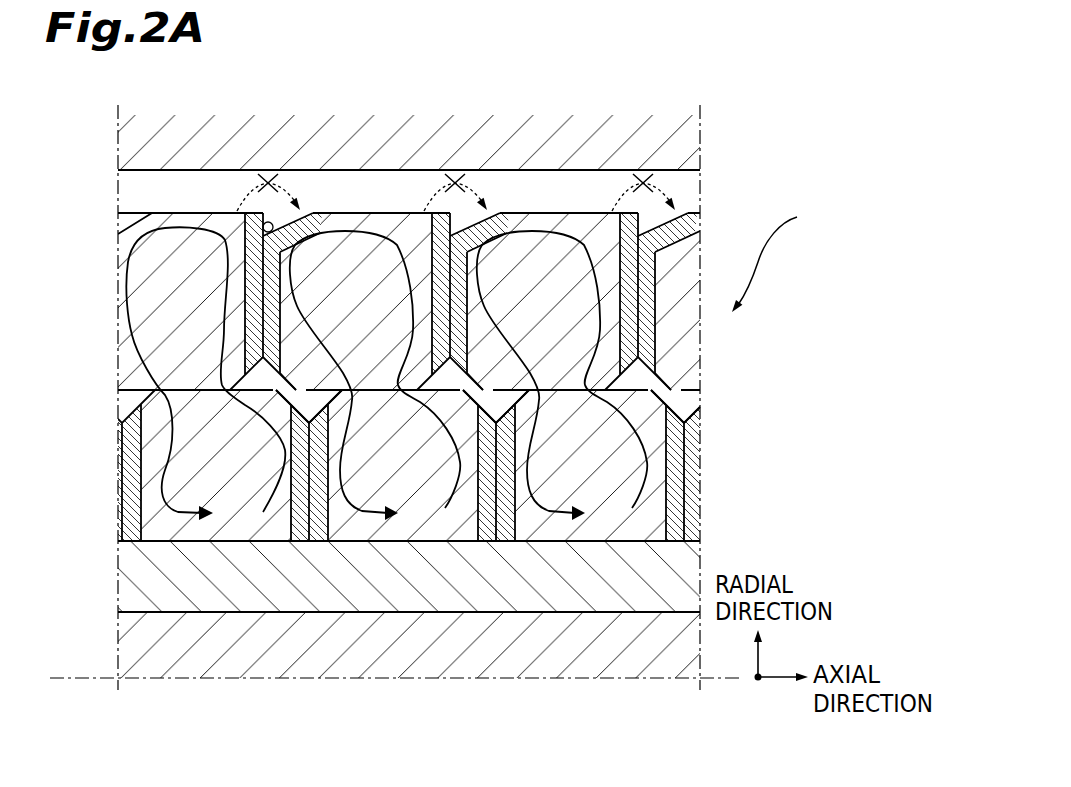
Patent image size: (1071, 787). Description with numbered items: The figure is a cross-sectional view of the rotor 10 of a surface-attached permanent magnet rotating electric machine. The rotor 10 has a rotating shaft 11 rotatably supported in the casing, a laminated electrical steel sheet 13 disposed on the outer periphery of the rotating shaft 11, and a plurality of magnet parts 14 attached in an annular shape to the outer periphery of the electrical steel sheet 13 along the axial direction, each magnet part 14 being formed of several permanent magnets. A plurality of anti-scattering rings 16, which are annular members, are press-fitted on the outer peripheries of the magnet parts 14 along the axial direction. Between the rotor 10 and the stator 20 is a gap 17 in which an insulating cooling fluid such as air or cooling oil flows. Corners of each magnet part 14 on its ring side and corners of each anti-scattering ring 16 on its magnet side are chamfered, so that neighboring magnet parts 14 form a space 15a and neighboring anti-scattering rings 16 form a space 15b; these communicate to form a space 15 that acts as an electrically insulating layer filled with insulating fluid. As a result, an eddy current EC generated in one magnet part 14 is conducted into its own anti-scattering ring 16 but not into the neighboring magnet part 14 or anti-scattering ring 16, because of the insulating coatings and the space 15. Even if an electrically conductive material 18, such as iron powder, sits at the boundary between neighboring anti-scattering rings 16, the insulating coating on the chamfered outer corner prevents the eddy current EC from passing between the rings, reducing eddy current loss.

The rotor 10 is at (779, 254).
The rotating shaft 11 is at (135, 641).
The electrical steel sheet 13 is at (135, 578).
The magnet part 14 is at (232, 503).
The space 15 is at (797, 333).
The space 15a is at (688, 400).
The space 15b is at (660, 370).
The anti-scattering ring 16 is at (220, 232).
The gap 17 is at (138, 197).
The electrically conductive material 18 is at (268, 221).
The stator 20 is at (680, 138).
The eddy current EC is at (366, 230).